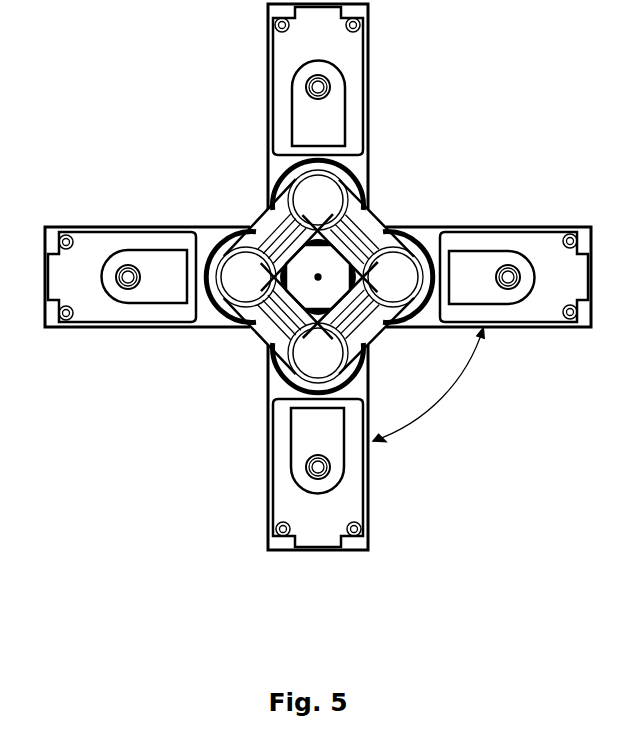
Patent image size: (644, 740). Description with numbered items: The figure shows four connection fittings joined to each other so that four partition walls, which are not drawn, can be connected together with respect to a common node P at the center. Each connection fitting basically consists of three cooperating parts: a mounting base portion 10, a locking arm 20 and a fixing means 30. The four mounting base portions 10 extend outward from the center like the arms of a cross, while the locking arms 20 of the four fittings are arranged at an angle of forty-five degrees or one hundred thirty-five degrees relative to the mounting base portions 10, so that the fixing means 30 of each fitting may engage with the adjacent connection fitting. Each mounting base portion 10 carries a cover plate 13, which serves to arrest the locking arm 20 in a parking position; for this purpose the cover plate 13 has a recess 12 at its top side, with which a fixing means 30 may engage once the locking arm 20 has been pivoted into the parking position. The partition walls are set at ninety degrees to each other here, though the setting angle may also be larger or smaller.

The mounting base portion 10 is at (368, 170).
The recess 12 is at (508, 268).
The cover plate 13 is at (555, 272).
The locking arm 20 is at (358, 236).
The fixing means 30 is at (397, 266).
The node P is at (315, 281).